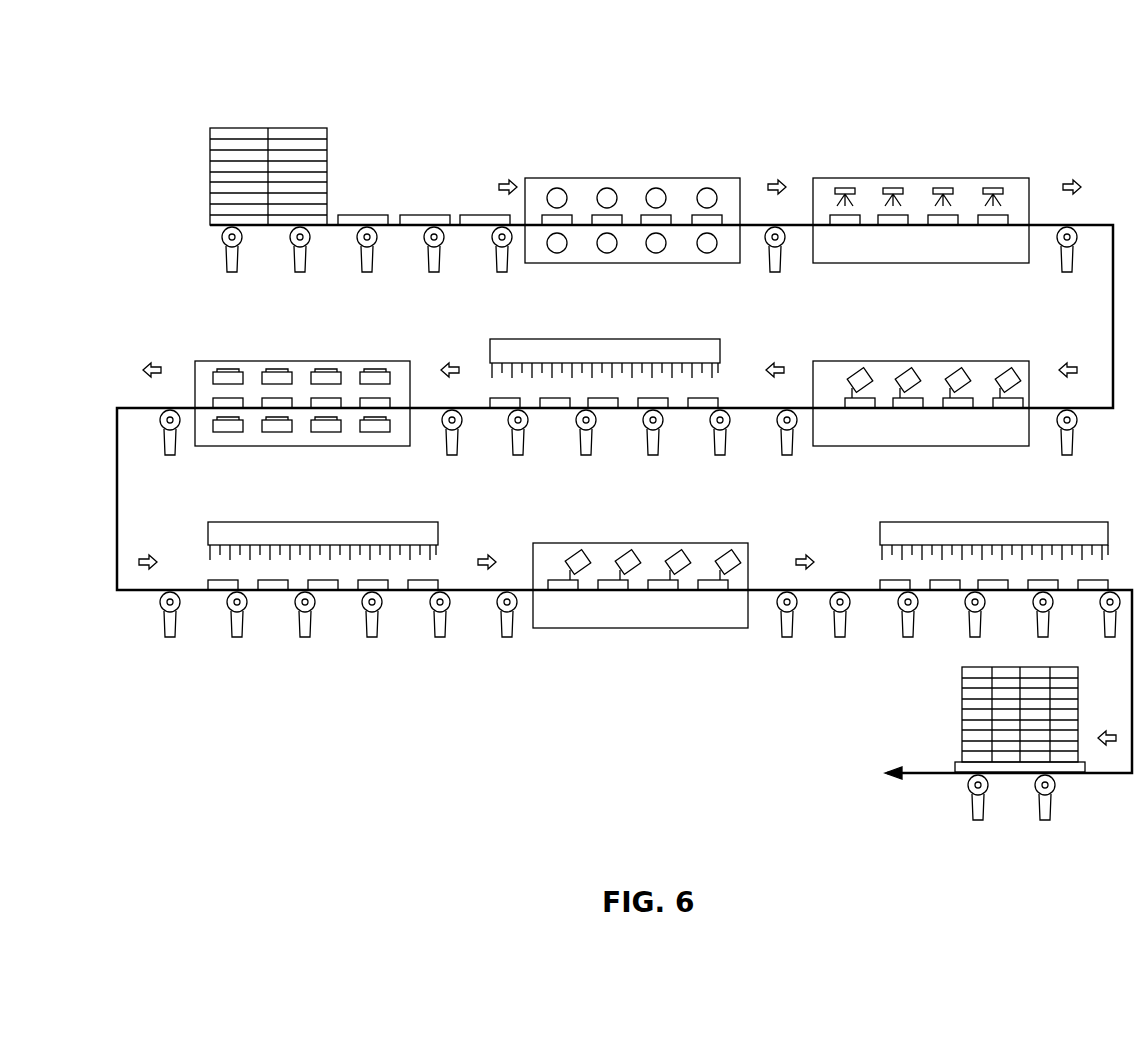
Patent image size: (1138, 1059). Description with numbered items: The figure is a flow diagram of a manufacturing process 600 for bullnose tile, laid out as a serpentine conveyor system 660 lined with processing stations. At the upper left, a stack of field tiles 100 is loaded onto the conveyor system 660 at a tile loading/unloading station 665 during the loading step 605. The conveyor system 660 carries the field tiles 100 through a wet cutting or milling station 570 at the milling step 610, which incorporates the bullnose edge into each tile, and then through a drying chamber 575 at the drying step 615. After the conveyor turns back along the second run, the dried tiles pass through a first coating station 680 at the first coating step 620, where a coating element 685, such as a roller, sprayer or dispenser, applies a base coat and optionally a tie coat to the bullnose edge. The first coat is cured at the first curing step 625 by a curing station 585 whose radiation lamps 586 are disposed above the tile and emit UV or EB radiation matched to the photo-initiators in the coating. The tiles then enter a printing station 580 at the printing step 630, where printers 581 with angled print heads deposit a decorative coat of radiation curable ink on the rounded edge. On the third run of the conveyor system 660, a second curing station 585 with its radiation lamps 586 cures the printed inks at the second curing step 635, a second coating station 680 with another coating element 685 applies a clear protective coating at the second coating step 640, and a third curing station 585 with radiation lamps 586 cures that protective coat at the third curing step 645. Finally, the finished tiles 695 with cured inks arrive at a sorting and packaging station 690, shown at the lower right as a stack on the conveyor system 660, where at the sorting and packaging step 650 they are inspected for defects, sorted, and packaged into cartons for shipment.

The manufacturing process 600 is at (168, 60).
The loading step 605 is at (268, 161).
The field tiles 100 is at (406, 215).
The tile loading/unloading station 665 is at (286, 256).
The conveyor system 660 is at (339, 227).
The wet cutting or milling step 610 is at (632, 223).
The wet cutting or milling station 570 is at (636, 265).
The drying step 615 is at (921, 223).
The drying chamber 575 is at (938, 265).
The printing step 630 is at (310, 415).
The printing station 580 is at (305, 446).
The printers 581 is at (377, 425).
The first curing step 625 is at (580, 355).
The curing stations 585 is at (683, 339).
The radiation lamps 586 is at (490, 370).
The first coating step 620 is at (921, 399).
The coating element 685 is at (962, 376).
The coating station 680 is at (921, 446).
The second curing step 635 is at (433, 522).
The second coating step 640 is at (683, 556).
The third curing step 645 is at (1073, 522).
The sorting and packaging step 650 is at (1006, 719).
The tiles 695 is at (962, 743).
The sorting and packaging station 690 is at (1033, 811).